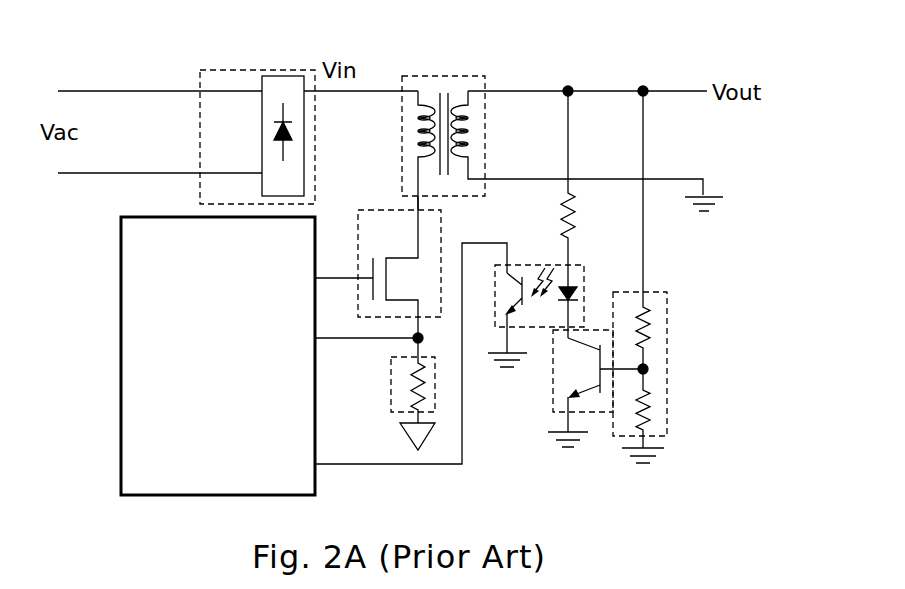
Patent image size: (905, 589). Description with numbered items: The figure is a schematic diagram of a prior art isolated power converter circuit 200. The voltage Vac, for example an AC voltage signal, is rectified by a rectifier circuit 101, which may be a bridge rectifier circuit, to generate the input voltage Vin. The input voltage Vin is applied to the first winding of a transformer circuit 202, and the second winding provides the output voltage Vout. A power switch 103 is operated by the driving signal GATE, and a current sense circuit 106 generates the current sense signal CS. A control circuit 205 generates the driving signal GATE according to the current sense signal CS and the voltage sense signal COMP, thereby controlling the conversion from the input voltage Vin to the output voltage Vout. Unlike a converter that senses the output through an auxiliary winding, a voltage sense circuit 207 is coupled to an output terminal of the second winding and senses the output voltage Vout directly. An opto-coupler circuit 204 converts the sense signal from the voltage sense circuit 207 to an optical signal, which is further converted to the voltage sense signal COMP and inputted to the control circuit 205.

The rectifier circuit 101 is at (243, 199).
The transformer circuit 202 is at (463, 76).
The power switch 103 is at (401, 243).
The current sense circuit 106 is at (391, 380).
The control circuit 205 is at (172, 486).
The opto-coupler circuit 204 is at (584, 299).
The voltage sense circuit 207 is at (667, 408).
The isolated power converter circuit 200 is at (782, 57).